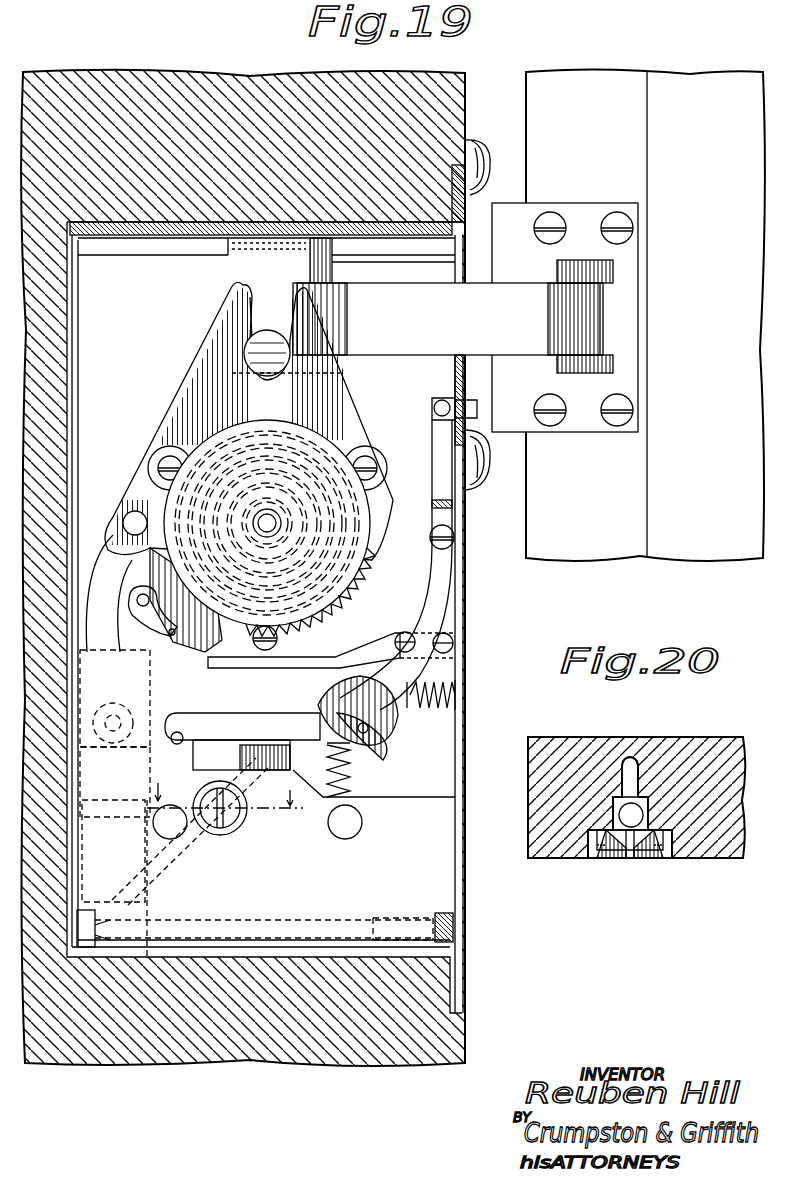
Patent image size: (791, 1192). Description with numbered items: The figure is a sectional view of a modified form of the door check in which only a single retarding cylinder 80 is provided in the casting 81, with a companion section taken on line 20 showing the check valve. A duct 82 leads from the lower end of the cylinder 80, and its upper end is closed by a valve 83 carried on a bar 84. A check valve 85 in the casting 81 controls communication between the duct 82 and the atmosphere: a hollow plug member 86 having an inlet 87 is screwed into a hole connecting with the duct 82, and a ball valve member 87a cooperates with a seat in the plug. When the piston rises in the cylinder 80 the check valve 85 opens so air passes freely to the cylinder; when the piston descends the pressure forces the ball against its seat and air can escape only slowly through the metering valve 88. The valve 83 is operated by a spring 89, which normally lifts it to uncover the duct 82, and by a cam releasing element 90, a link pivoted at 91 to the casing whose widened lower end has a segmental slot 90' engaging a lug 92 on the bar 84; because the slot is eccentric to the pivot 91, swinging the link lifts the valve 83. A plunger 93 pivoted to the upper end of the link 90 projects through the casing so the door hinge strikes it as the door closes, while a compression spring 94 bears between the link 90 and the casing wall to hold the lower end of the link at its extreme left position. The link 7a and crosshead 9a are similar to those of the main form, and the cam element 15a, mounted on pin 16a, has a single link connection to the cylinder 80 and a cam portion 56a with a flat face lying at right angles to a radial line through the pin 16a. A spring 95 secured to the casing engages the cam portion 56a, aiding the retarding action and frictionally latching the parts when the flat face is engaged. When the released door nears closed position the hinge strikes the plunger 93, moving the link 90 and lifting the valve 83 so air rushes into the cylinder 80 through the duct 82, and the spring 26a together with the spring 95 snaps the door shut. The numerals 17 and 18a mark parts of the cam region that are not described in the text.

In FIG. 19, the link 7a is at (412, 338).
In FIG. 19, the crosshead 9a is at (232, 262).
In FIG. 19, the cam element 15a is at (180, 410).
In FIG. 19, the pin 16a is at (272, 520).
In FIG. 19, the cam peak notch 17 is at (246, 322).
In FIG. 19, the roller 18a is at (265, 353).
In FIG. 19, the section line 20 is at (232, 791).
In FIG. 19, the spring 26a is at (368, 555).
In FIG. 19, the cam portion 56a is at (198, 636).
In FIG. 19, the retarding cylinder 80 is at (98, 864).
In FIG. 19, the casting 81 is at (385, 870).
In FIG. 20, the casting 81 is at (540, 860).
In FIG. 19, the duct 82 is at (206, 848).
In FIG. 20, the duct 82 is at (636, 768).
In FIG. 19, the valve 83 is at (240, 758).
In FIG. 19, the bar 84 is at (232, 714).
In FIG. 19, the check valve 85 is at (242, 818).
In FIG. 20, the check valve 85 is at (608, 852).
In FIG. 20, the hollow plug member 86 is at (650, 852).
In FIG. 19, the inlet 87 is at (242, 800).
In FIG. 20, the inlet 87 is at (630, 858).
In FIG. 20, the ball valve member 87a is at (648, 800).
In FIG. 19, the metering valve 88 is at (95, 945).
In FIG. 19, the spring 89 is at (355, 790).
In FIG. 19, the cam releasing element 90 is at (396, 627).
In FIG. 19, the segmental slot 90' is at (342, 710).
In FIG. 19, the pivot 91 is at (455, 537).
In FIG. 19, the lug 92 is at (395, 738).
In FIG. 19, the plunger 93 is at (440, 400).
In FIG. 19, the compression spring 94 is at (455, 690).
In FIG. 19, the spring 95 is at (340, 652).